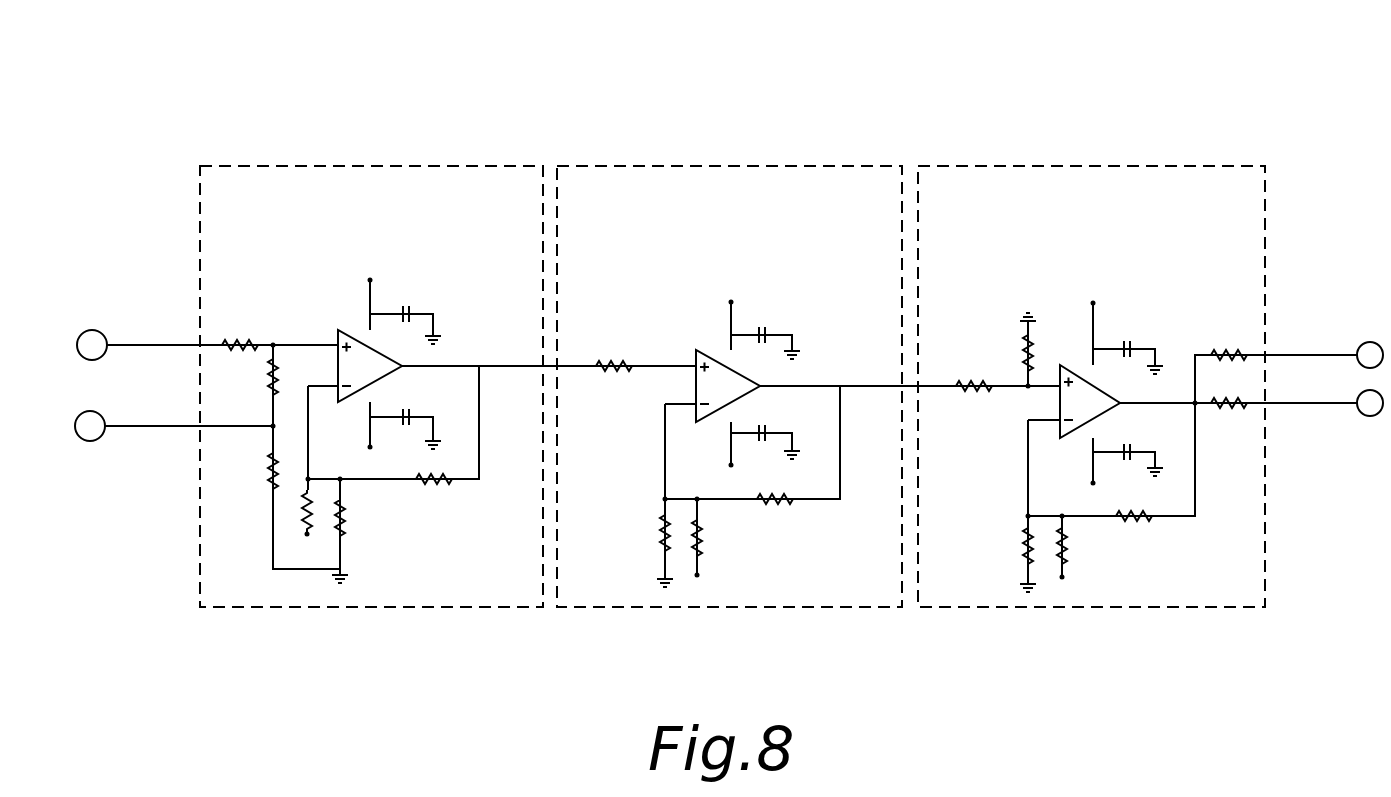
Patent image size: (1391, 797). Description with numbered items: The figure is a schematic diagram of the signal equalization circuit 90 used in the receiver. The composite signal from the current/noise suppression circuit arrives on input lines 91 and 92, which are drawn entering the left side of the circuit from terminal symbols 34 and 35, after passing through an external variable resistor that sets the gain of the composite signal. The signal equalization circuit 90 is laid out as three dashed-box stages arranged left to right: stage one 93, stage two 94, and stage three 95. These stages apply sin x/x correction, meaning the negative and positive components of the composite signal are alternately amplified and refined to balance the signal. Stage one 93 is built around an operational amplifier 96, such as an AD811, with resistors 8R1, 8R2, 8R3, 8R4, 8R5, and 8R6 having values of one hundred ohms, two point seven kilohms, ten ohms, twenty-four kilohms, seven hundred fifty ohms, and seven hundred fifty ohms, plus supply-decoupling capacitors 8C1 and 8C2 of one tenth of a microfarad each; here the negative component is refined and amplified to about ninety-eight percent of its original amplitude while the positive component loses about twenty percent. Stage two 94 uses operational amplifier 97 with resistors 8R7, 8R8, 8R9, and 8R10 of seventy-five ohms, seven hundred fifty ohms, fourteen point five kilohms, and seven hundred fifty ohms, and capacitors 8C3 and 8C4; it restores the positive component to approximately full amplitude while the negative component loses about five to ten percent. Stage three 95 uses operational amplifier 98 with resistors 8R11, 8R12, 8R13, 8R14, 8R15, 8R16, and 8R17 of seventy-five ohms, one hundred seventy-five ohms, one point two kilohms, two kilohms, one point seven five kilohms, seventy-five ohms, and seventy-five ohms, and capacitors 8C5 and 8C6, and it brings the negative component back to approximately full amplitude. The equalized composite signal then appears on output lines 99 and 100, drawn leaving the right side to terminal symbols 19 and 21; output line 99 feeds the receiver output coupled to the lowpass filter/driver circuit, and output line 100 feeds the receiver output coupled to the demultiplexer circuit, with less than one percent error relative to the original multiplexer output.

The signal equalization circuit 90 is at (835, 64).
The stage one 93 is at (373, 163).
The stage two 94 is at (680, 163).
The stage three 95 is at (1055, 163).
The operational amplifier 96 is at (378, 354).
The operational amplifier 97 is at (738, 376).
The operational amplifier 98 is at (1104, 401).
The input line 91 is at (142, 344).
The input line 92 is at (150, 426).
The output line 99 is at (1292, 355).
The output line 100 is at (1292, 403).
The input terminal 34 is at (92, 345).
The input terminal 35 is at (90, 426).
The output terminal 19 is at (1370, 355).
The output terminal 21 is at (1370, 403).
The resistor 8R1 is at (240, 332).
The resistor 8R2 is at (250, 377).
The resistor 8R3 is at (250, 471).
The resistor 8R4 is at (291, 513).
The resistor 8R5 is at (361, 518).
The resistor 8R6 is at (431, 492).
The resistor 8R7 is at (612, 353).
The resistor 8R8 is at (637, 533).
The resistor 8R9 is at (718, 539).
The resistor 8R10 is at (772, 510).
The resistor 8R11 is at (967, 396).
The resistor 8R12 is at (1004, 353).
The resistor 8R13 is at (999, 546).
The resistor 8R14 is at (1088, 550).
The resistor 8R15 is at (1137, 527).
The resistor 8R16 is at (1227, 342).
The resistor 8R17 is at (1227, 391).
The capacitor 8C1 is at (406, 303).
The capacitor 8C2 is at (404, 405).
The capacitor 8C3 is at (768, 321).
The capacitor 8C4 is at (768, 420).
The capacitor 8C5 is at (1126, 334).
The capacitor 8C6 is at (1126, 440).